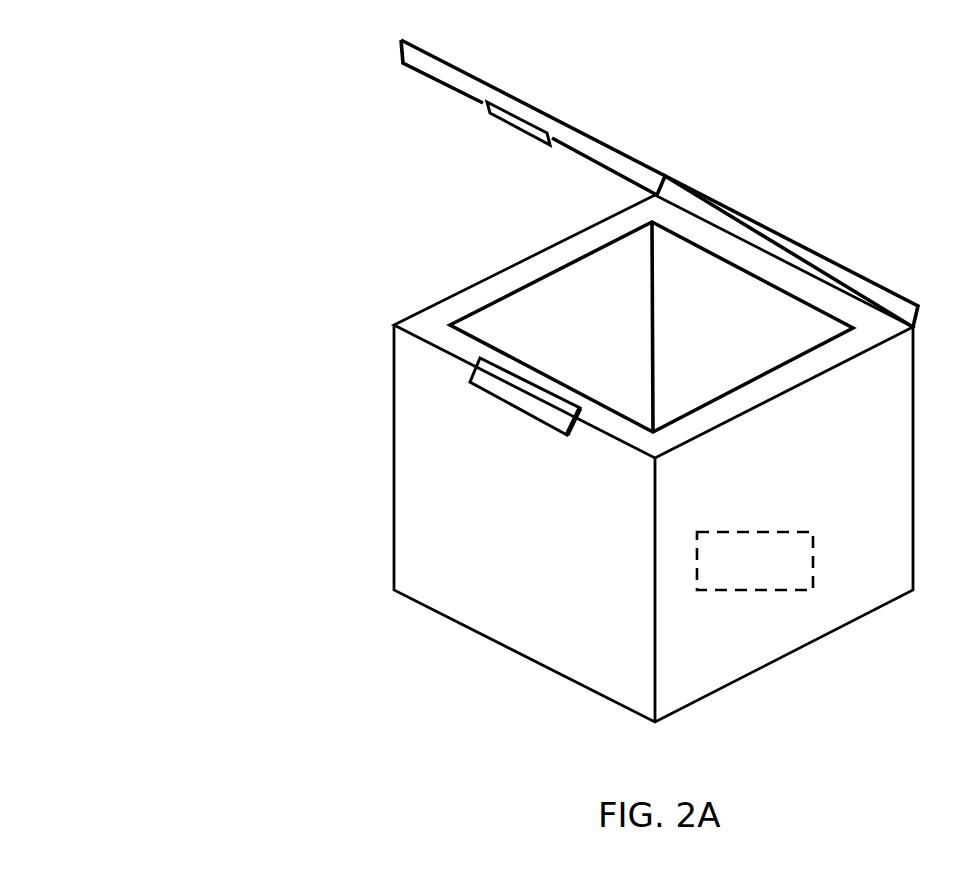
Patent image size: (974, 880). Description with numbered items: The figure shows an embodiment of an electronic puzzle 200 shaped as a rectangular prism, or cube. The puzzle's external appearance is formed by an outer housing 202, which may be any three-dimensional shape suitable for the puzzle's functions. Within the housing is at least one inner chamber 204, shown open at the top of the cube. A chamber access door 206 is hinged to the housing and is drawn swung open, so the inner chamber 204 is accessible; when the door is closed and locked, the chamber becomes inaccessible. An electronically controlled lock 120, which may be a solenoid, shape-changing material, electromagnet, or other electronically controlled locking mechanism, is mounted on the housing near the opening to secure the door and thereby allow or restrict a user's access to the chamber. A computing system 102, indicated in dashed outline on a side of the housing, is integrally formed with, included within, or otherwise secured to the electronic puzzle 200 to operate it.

The electronic puzzle 200 is at (228, 117).
The outer housing 202 is at (898, 405).
The inner chamber 204 is at (562, 300).
The chamber access door 206 is at (610, 162).
The electronically controlled lock 120 is at (513, 409).
The computing system 102 is at (753, 532).